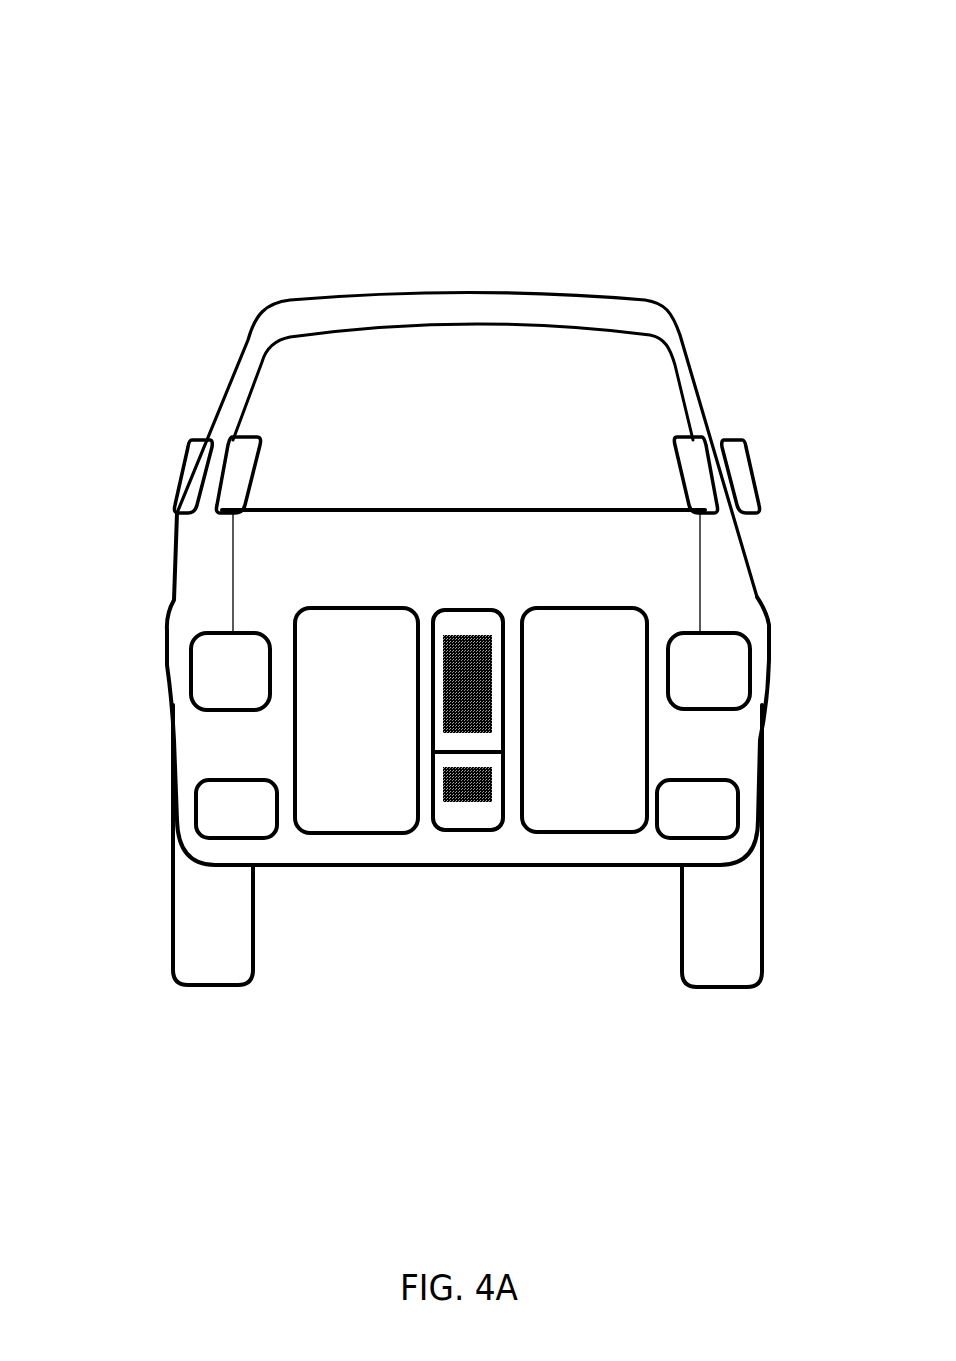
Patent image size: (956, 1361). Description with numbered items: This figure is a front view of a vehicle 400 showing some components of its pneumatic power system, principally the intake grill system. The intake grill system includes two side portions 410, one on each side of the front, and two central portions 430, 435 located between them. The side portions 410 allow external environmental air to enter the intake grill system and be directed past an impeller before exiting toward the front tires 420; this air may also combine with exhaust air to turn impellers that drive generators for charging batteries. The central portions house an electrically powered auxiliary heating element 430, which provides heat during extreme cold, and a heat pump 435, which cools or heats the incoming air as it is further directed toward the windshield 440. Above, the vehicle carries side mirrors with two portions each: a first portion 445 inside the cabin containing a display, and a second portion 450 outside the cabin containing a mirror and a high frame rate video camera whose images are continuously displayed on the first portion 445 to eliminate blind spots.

The vehicle 400 is at (60, 100).
The side portions 410 is at (360, 725).
The front tires 420 is at (210, 927).
The electrically powered auxiliary heating element 430 is at (468, 785).
The heat pump 435 is at (467, 683).
The windshield 440 is at (397, 443).
The first portion of side mirror 445 is at (666, 461).
The second portion of side mirror 450 is at (755, 453).